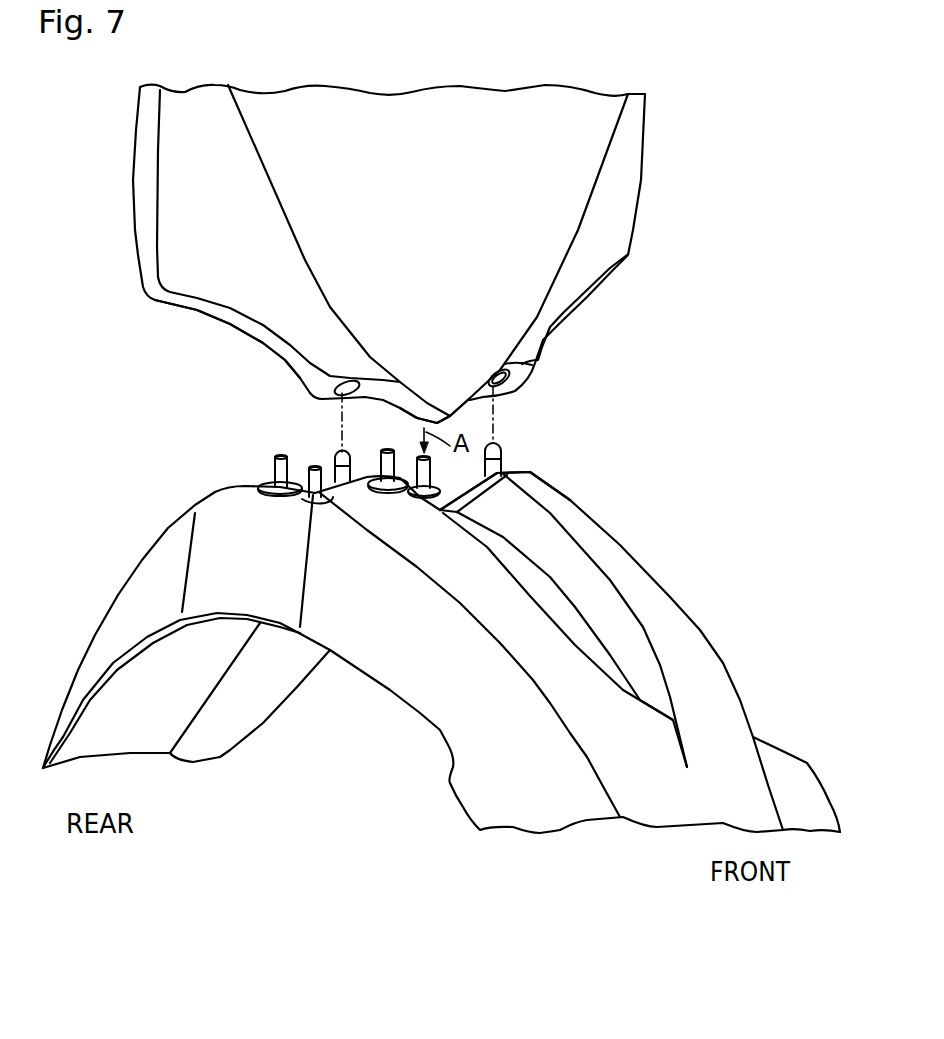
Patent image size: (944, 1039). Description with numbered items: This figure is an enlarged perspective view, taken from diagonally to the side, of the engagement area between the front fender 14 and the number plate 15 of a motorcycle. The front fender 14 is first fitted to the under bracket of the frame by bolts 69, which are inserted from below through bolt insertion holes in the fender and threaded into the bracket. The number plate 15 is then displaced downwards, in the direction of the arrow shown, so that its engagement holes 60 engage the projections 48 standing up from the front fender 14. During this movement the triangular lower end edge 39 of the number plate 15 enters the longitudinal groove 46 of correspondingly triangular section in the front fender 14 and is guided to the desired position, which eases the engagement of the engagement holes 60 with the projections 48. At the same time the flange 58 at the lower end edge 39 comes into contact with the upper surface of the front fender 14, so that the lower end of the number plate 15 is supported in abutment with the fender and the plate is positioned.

The front fender 14 is at (718, 652).
The number plate 15 is at (641, 212).
The lower end edge 39 is at (448, 419).
The longitudinal groove 46 is at (477, 532).
The projection 48 is at (335, 466).
The flange 58 is at (307, 377).
The engagement hole 60 is at (335, 395).
The bolt 69 is at (270, 470).